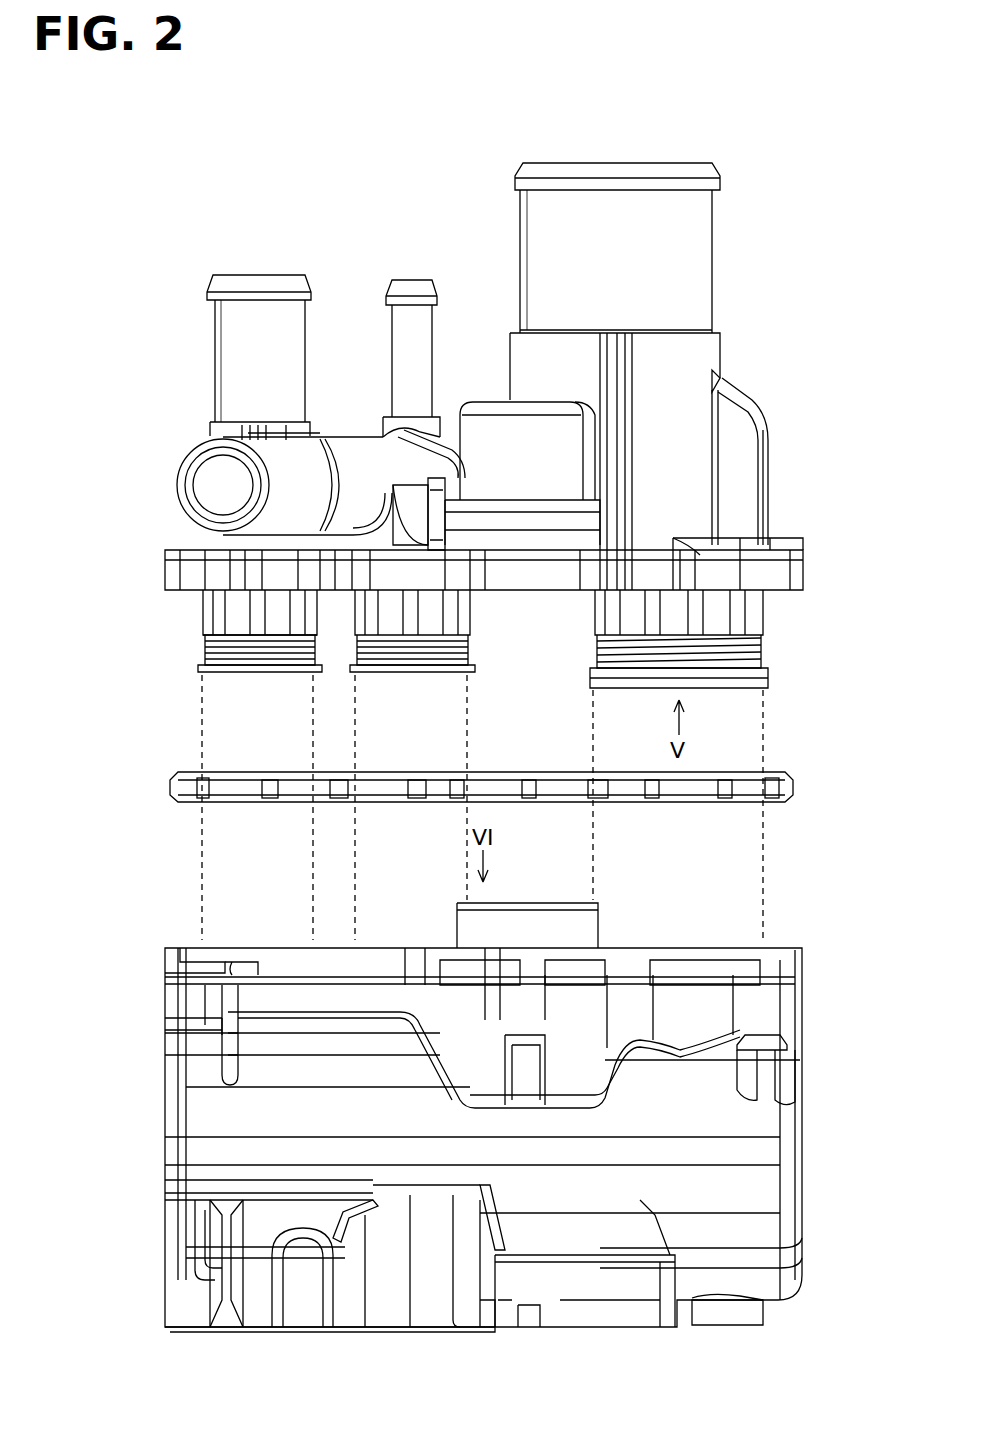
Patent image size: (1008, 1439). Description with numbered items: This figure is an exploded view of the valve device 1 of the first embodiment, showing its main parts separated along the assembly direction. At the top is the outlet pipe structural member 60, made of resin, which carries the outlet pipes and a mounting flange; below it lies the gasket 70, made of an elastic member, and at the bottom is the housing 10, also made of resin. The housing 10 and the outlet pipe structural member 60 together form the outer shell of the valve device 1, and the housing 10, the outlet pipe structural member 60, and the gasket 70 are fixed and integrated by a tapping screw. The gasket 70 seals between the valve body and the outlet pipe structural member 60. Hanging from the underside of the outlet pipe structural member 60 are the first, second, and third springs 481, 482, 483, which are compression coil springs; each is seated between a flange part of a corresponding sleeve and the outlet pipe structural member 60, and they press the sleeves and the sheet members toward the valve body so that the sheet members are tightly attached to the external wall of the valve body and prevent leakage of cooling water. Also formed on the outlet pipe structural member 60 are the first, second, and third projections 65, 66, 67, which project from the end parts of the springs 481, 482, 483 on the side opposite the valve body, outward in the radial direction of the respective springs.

The valve device 1 is at (676, 152).
The housing 10 is at (803, 1097).
The outlet pipe structural member 60 is at (770, 442).
The first projection 65 is at (745, 612).
The second projection 66 is at (455, 612).
The third projection 67 is at (210, 612).
The gasket 70 is at (795, 787).
The first spring 481 is at (765, 648).
The second spring 482 is at (468, 648).
The third spring 483 is at (205, 648).